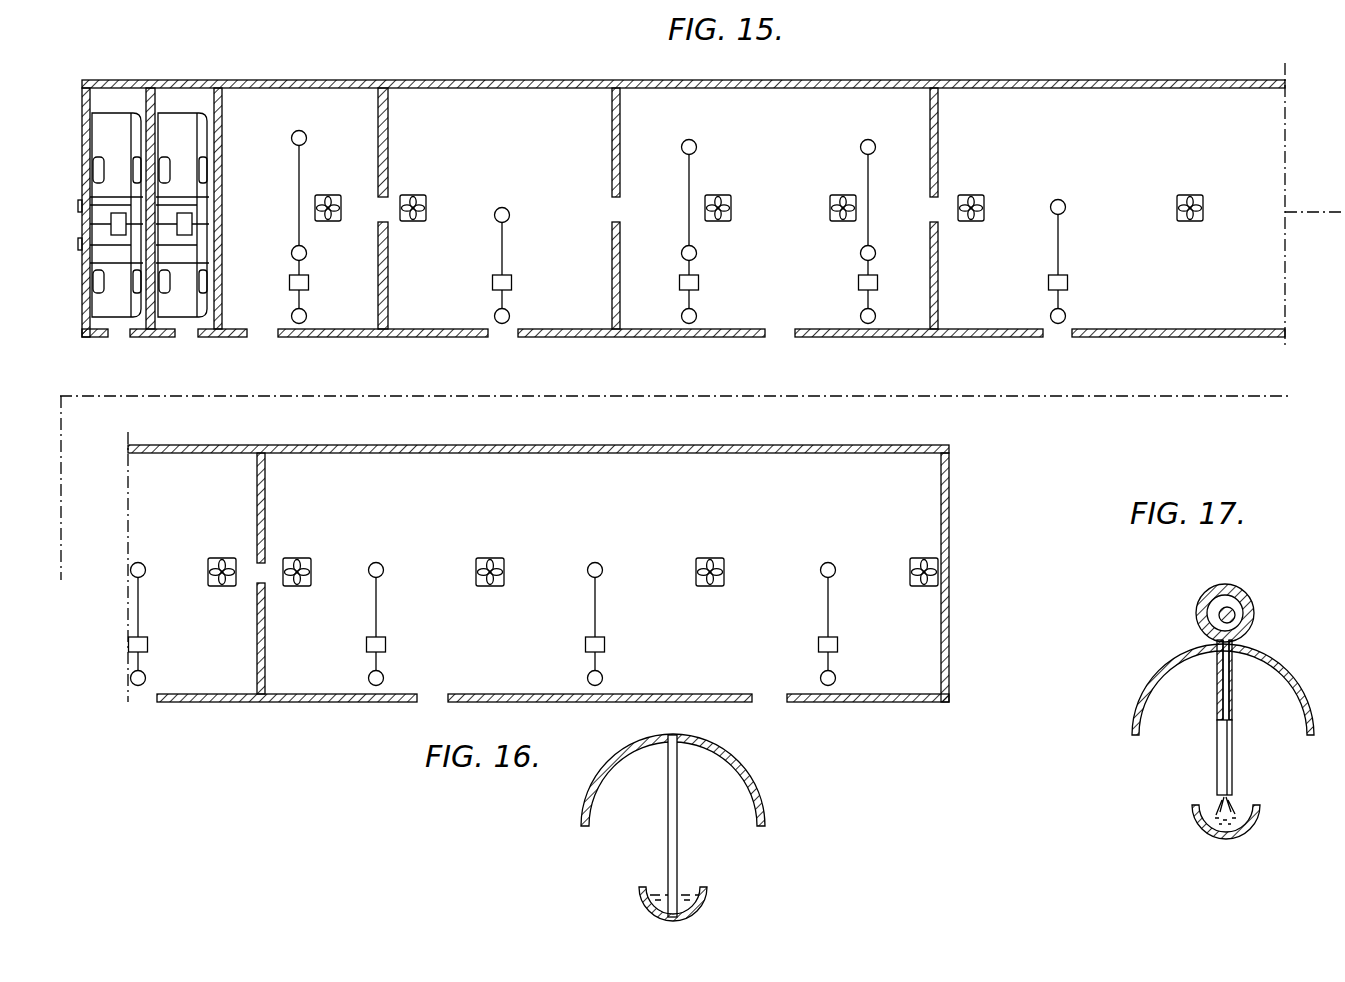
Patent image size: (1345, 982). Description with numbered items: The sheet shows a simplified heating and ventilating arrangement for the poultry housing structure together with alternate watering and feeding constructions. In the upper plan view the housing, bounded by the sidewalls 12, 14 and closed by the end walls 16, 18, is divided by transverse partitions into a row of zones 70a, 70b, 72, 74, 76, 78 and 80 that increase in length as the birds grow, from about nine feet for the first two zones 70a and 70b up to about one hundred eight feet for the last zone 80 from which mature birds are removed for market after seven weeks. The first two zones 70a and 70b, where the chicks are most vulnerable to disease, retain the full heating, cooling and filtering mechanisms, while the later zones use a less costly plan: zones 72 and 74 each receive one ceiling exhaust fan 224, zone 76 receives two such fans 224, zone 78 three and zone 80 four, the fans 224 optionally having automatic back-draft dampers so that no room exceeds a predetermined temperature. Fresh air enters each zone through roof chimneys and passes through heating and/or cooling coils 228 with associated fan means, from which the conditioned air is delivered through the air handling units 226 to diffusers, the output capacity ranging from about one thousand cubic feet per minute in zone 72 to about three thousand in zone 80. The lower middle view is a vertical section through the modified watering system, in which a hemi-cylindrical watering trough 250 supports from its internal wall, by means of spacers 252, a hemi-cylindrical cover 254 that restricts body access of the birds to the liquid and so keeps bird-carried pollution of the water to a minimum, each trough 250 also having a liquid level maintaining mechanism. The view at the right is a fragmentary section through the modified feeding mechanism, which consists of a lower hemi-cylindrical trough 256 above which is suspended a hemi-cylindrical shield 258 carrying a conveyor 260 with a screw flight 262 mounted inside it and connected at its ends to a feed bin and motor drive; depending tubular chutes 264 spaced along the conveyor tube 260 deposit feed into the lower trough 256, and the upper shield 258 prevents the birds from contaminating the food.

In FIG. 15, the sidewall 12 is at (437, 340).
In FIG. 15, the sidewall 14 is at (489, 82).
In FIG. 15, the end wall 16 is at (83, 140).
In FIG. 16, the end wall 18 is at (949, 512).
In FIG. 15, the zone 70a is at (123, 98).
In FIG. 15, the zone 70b is at (189, 98).
In FIG. 15, the zone 72 is at (318, 98).
In FIG. 15, the zone 74 is at (558, 108).
In FIG. 15, the zone 76 is at (847, 98).
In FIG. 15, the zone 78 is at (1133, 98).
In FIG. 16, the zone 80 is at (700, 470).
In FIG. 15, the ceiling exhaust fan 224 is at (356, 180).
In FIG. 16, the ceiling exhaust fan 224 is at (218, 558).
In FIG. 15, the sensor unit 226 is at (307, 318).
In FIG. 16, the sensor unit 226 is at (146, 678).
In FIG. 15, the heating and/or cooling coils 228 is at (298, 130).
In FIG. 16, the heating and/or cooling coils 228 is at (384, 571).
In FIG. 16, the watering trough 250 is at (705, 900).
In FIG. 16, the spacers 252 is at (668, 820).
In FIG. 16, the hemi-cylindrical cover 254 is at (745, 765).
In FIG. 17, the hemi-cylindrical trough 256 is at (1195, 815).
In FIG. 17, the hemi-cylindrical shield 258 is at (1163, 672).
In FIG. 17, the conveyor 260 is at (1196, 615).
In FIG. 17, the screw flight 262 is at (1229, 600).
In FIG. 17, the chutes 264 is at (1217, 745).